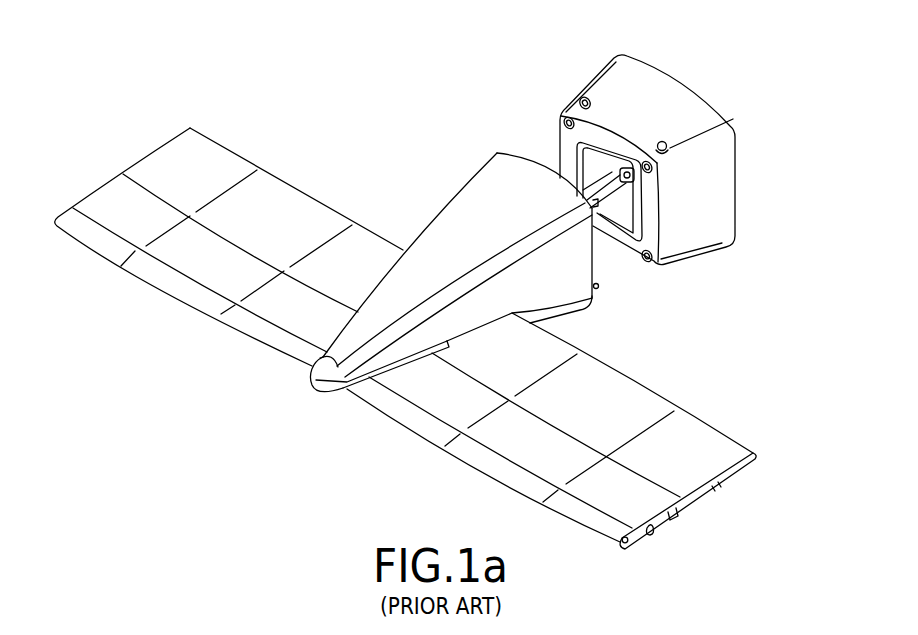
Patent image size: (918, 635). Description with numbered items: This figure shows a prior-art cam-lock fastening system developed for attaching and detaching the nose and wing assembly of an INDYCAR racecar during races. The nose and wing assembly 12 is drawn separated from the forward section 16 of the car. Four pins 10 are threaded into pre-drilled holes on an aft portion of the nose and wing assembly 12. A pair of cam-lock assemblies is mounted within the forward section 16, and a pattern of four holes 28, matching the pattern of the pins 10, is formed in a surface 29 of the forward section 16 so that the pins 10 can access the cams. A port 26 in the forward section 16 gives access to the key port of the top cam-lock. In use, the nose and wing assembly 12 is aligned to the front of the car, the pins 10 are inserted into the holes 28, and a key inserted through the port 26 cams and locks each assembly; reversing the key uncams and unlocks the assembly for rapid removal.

The pins 10 is at (523, 134).
The nose and wing assembly 12 is at (318, 128).
The forward section 16 is at (722, 250).
The port 26 is at (585, 97).
The holes 28 is at (634, 276).
The surface 29 is at (651, 197).